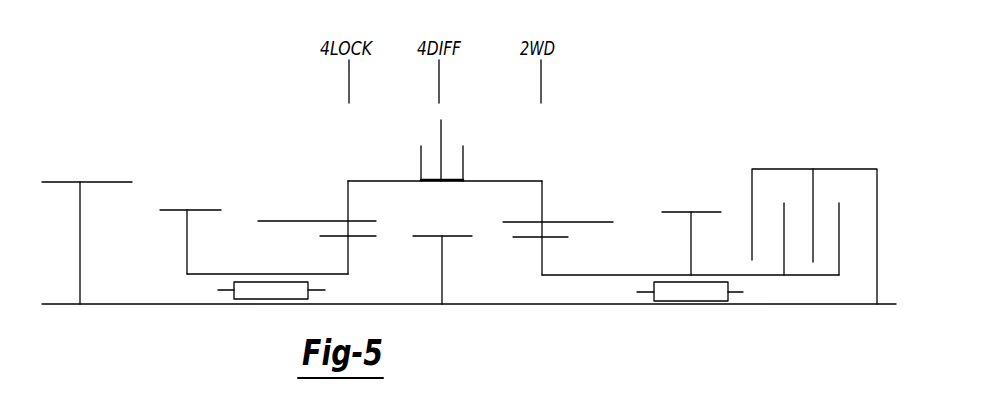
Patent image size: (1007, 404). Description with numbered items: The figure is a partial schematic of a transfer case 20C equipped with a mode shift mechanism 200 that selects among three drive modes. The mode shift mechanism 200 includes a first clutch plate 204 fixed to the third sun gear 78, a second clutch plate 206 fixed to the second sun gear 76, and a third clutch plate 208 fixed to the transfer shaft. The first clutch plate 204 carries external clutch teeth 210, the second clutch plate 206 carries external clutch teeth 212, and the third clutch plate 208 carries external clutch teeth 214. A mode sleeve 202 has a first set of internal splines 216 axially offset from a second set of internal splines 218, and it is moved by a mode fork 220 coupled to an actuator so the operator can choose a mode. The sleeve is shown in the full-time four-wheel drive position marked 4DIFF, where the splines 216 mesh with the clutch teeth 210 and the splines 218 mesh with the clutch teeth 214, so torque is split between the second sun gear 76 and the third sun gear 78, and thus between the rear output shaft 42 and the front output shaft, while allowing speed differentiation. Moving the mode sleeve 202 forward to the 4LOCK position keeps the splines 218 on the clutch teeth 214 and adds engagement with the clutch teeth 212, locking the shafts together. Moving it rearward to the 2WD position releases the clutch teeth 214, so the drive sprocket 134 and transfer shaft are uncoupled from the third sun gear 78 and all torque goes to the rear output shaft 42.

The transfer case 20C is at (710, 142).
The rear output shaft 42 is at (615, 305).
The second sun gear 76 is at (80, 238).
The third sun gear 78 is at (187, 240).
The drive sprocket 134 is at (691, 250).
The mode shift mechanism 200 is at (592, 182).
The mode sleeve 202 is at (348, 181).
The first clutch plate 204 is at (348, 263).
The second clutch plate 206 is at (442, 270).
The third clutch plate 208 is at (542, 263).
The clutch teeth 210 is at (376, 235).
The clutch teeth 212 is at (443, 233).
The clutch teeth 214 is at (512, 237).
The first set of internal splines 216 is at (290, 221).
The second set of internal splines 218 is at (605, 222).
The mode fork 220 is at (441, 137).